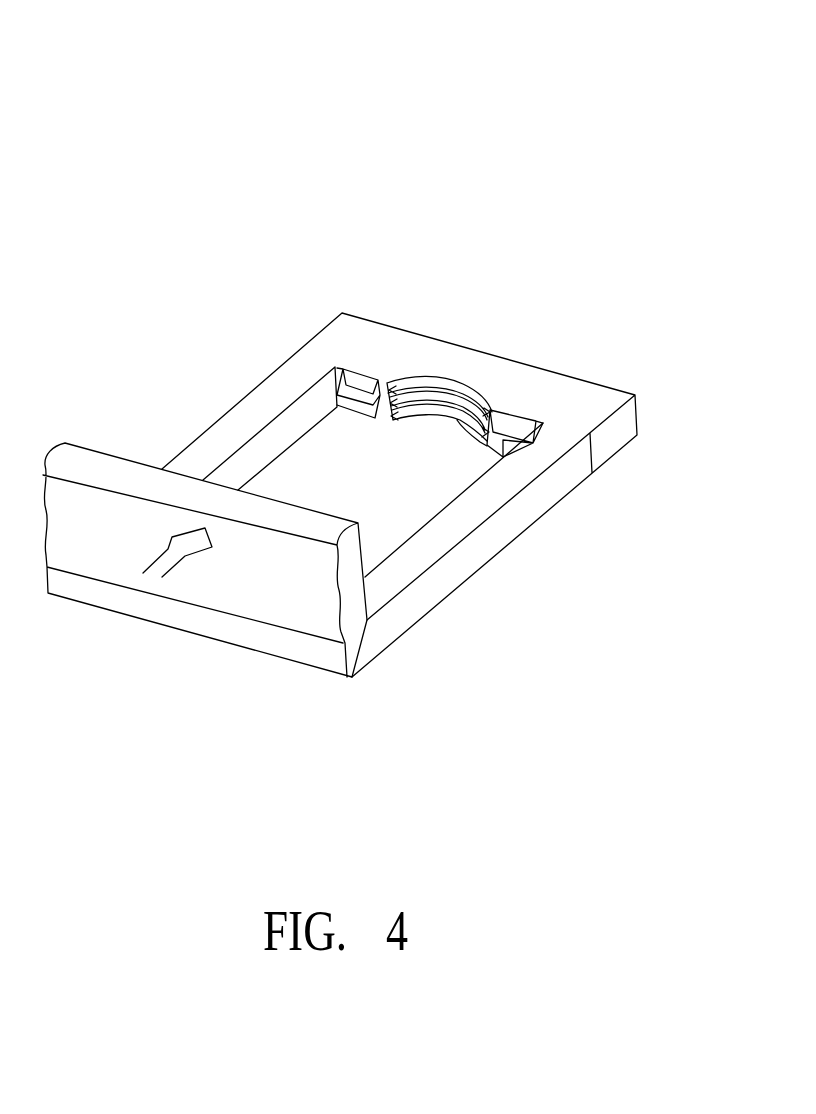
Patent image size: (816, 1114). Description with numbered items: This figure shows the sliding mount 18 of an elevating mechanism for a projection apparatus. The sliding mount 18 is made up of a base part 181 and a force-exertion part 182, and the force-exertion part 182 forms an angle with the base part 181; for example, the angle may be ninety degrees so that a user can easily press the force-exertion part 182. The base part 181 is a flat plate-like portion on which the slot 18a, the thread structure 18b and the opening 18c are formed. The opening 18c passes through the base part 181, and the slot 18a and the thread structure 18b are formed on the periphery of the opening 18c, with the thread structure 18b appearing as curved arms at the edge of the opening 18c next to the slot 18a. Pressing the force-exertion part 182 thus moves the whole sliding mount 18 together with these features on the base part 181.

The sliding mount 18 is at (37, 33).
The base part 181 is at (525, 383).
The force-exertion part 182 is at (103, 464).
The slot 18a is at (337, 403).
The thread structure 18b is at (438, 391).
The opening 18c is at (386, 487).